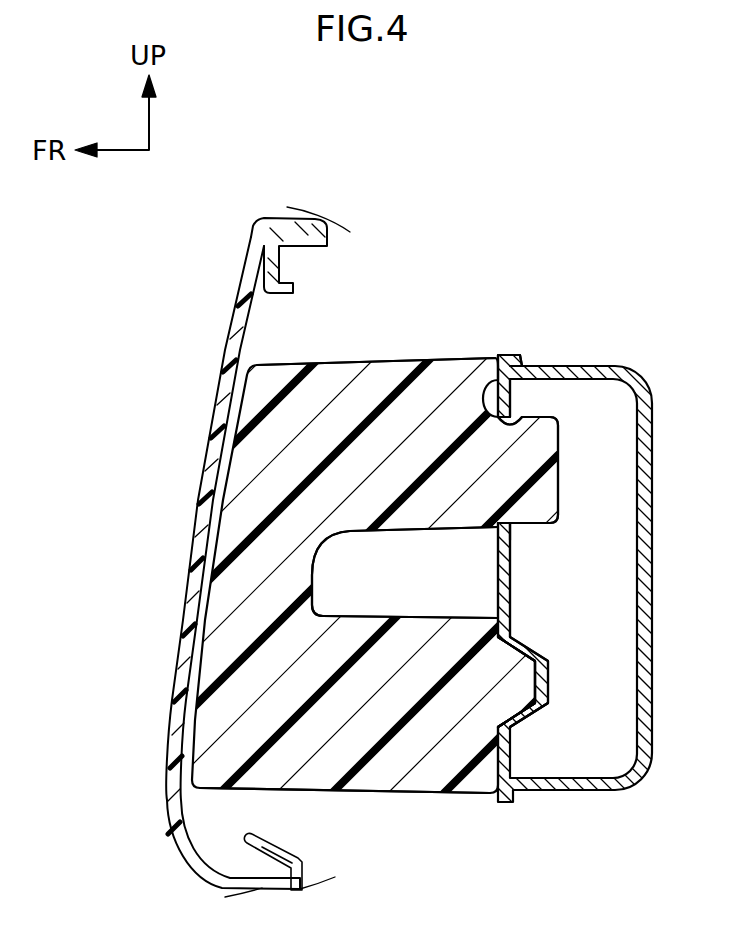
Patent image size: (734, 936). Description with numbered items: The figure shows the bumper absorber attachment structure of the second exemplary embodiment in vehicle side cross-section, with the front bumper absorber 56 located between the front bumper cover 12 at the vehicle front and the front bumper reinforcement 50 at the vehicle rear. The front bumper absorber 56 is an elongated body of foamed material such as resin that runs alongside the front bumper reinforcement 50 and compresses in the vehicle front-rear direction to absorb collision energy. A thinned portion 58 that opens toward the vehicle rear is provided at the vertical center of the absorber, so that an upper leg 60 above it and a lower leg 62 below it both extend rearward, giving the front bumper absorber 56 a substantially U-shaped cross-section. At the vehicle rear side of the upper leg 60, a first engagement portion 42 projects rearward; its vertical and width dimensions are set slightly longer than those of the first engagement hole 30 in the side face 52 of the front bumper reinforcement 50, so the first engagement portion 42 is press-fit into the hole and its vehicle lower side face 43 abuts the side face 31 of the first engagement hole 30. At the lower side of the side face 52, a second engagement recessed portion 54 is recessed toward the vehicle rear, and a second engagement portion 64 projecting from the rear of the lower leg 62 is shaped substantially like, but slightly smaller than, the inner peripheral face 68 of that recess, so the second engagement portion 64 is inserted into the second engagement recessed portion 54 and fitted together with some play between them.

The front bumper cover 12 is at (170, 743).
The first engagement hole 30 is at (518, 425).
The side face of first engagement hole 31 is at (525, 522).
The first engagement portion 42 is at (538, 440).
The vehicle lower side face 43 is at (522, 523).
The front bumper reinforcement 50 is at (593, 357).
The side face 52 is at (500, 558).
The second engagement recessed portion 54 is at (523, 650).
The front bumper absorber 56 is at (352, 356).
The thinned portion 58 is at (397, 592).
The upper leg 60 is at (393, 371).
The lower leg 62 is at (367, 788).
The second engagement portion 64 is at (520, 684).
The inner peripheral face 68 is at (523, 708).